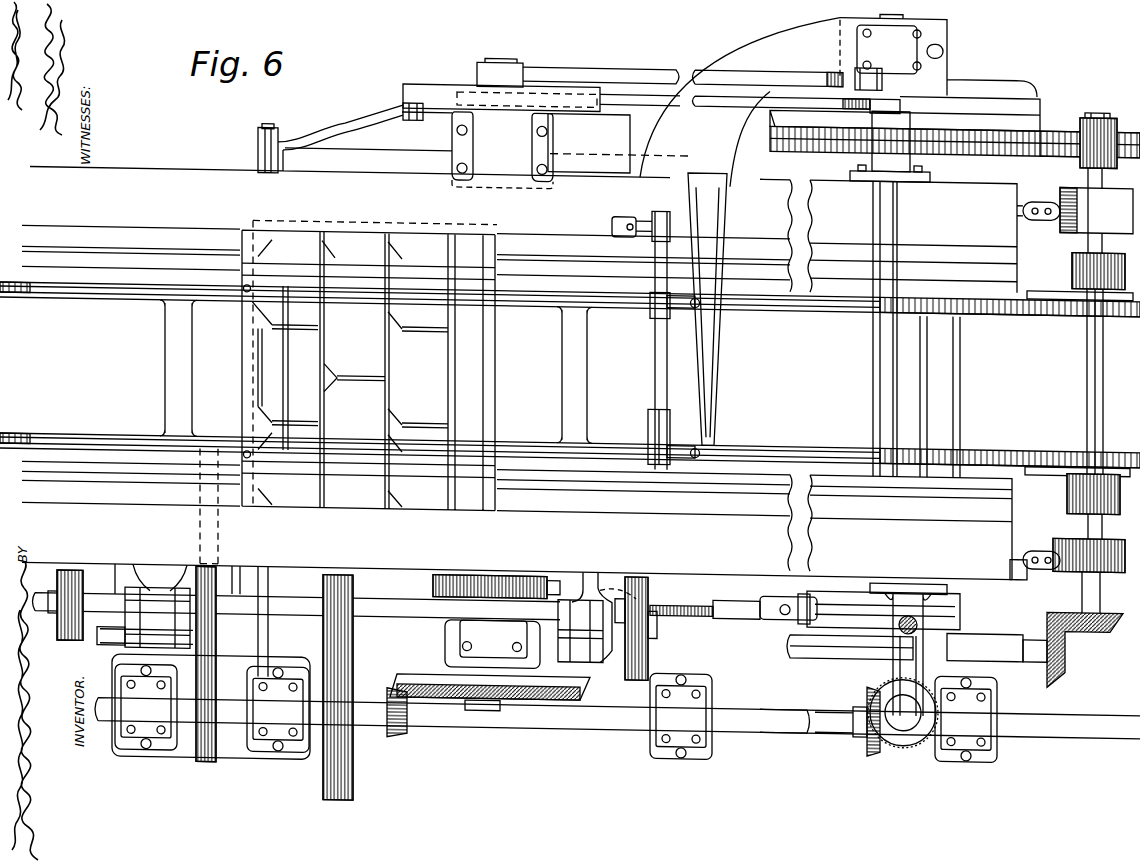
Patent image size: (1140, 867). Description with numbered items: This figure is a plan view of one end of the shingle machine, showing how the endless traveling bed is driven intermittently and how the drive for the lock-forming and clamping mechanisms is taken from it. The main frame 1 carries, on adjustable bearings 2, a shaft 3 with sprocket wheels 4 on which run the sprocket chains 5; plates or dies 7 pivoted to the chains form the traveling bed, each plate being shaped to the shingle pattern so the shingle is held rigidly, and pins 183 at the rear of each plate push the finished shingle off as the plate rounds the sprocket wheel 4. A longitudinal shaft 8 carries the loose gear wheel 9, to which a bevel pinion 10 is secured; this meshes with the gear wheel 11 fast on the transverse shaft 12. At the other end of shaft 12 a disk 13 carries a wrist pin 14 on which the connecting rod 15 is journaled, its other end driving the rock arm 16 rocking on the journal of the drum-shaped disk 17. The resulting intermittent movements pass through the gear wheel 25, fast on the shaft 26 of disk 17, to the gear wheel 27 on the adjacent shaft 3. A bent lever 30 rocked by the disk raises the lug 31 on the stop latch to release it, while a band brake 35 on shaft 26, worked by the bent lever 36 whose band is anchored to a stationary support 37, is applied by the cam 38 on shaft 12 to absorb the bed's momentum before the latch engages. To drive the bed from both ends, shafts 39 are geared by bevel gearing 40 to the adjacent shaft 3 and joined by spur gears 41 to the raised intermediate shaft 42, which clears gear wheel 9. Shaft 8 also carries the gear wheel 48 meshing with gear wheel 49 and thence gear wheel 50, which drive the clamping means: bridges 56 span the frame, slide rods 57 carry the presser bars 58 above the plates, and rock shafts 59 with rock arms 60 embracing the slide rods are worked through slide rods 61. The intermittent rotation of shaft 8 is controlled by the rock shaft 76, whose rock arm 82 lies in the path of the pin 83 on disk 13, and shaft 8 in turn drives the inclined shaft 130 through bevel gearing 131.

The main frame 1 is at (163, 342).
The adjustable bearings 2 is at (1068, 216).
The shaft 3 is at (1098, 94).
The sprocket wheels 4 is at (1000, 432).
The sprocket chains 5 is at (975, 432).
The plates or dies 7 is at (369, 366).
The longitudinal shaft 8 is at (226, 700).
The loose gear wheel 9 is at (354, 772).
The bevel pinion 10 is at (402, 727).
The gear wheel 11 is at (452, 690).
The transverse shaft 12 is at (482, 703).
The disk 13 is at (426, 76).
The wrist pin 14 is at (502, 50).
The connecting rod 15 is at (586, 58).
The rock arm 16 is at (872, 56).
The disk 17 is at (986, 96).
The gear wheel 25 is at (930, 120).
The shaft 26 is at (872, 351).
The gear wheel 27 is at (1056, 113).
The bent lever 30 is at (790, 84).
The lug 31 is at (896, 88).
The band brake 35 is at (856, 577).
The bent lever 36 is at (574, 566).
The stationary support 37 is at (757, 584).
The cam 38 is at (502, 566).
The shafts 39 is at (822, 645).
The bevel gearing 40 is at (1062, 662).
The spur gears 41 is at (72, 569).
The intermediate shaft 42 is at (398, 611).
The gear wheel 48 is at (218, 754).
The gear wheel 49 is at (192, 638).
The gear wheel 50 is at (220, 527).
The bridges 56 is at (715, 360).
The slide rods 57 is at (701, 303).
The presser bars 58 is at (73, 299).
The rock shafts 59 is at (654, 333).
The rock arms 60 is at (652, 210).
The slide rods 61 is at (611, 212).
The rock shaft 76 is at (268, 121).
The rock arm 82 is at (321, 121).
The pin 83 is at (405, 95).
The inclined shaft 130 is at (896, 655).
The bevel gearing 131 is at (880, 735).
The pins 183 is at (245, 288).